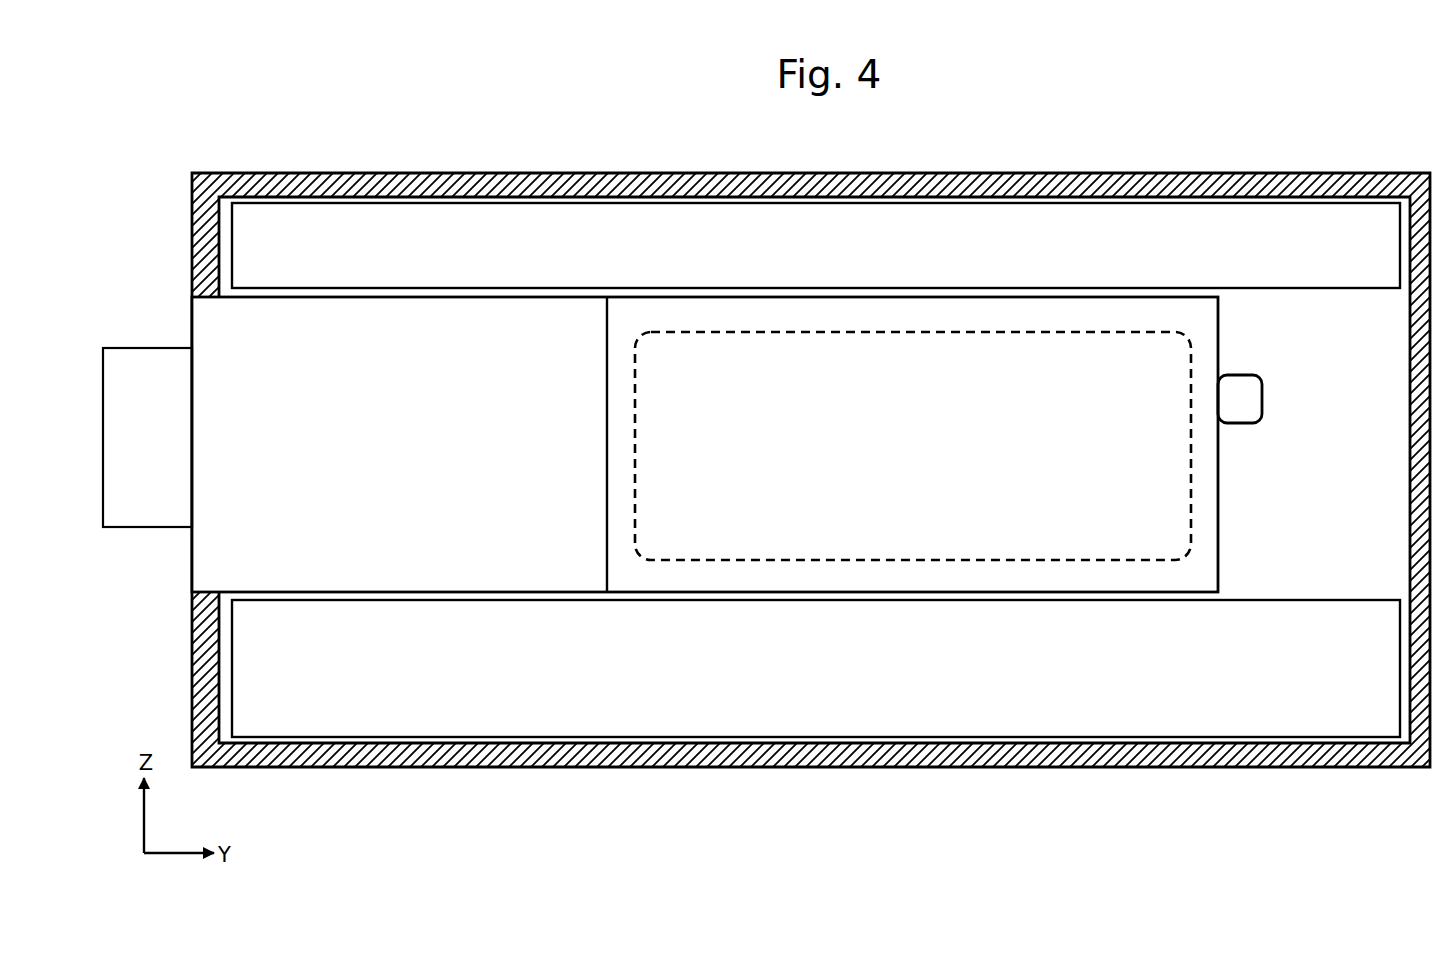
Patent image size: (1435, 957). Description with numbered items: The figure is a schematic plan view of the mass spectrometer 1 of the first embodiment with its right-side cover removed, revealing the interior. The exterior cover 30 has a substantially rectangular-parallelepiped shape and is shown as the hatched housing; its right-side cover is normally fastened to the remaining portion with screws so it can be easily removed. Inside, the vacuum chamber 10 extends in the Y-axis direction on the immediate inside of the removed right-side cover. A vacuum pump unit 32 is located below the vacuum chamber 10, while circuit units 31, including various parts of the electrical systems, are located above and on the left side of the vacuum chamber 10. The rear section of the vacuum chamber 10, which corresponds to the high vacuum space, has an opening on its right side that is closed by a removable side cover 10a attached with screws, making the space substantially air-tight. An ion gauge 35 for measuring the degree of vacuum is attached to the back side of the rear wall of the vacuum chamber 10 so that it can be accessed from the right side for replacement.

The mass spectrometer 1 is at (1353, 136).
The vacuum chamber 10 is at (890, 300).
The side cover 10a is at (1099, 576).
The exterior cover 30 is at (1062, 174).
The circuit units 31 is at (1135, 218).
The vacuum pump unit 32 is at (1073, 732).
The ion gauge 35 is at (1262, 382).